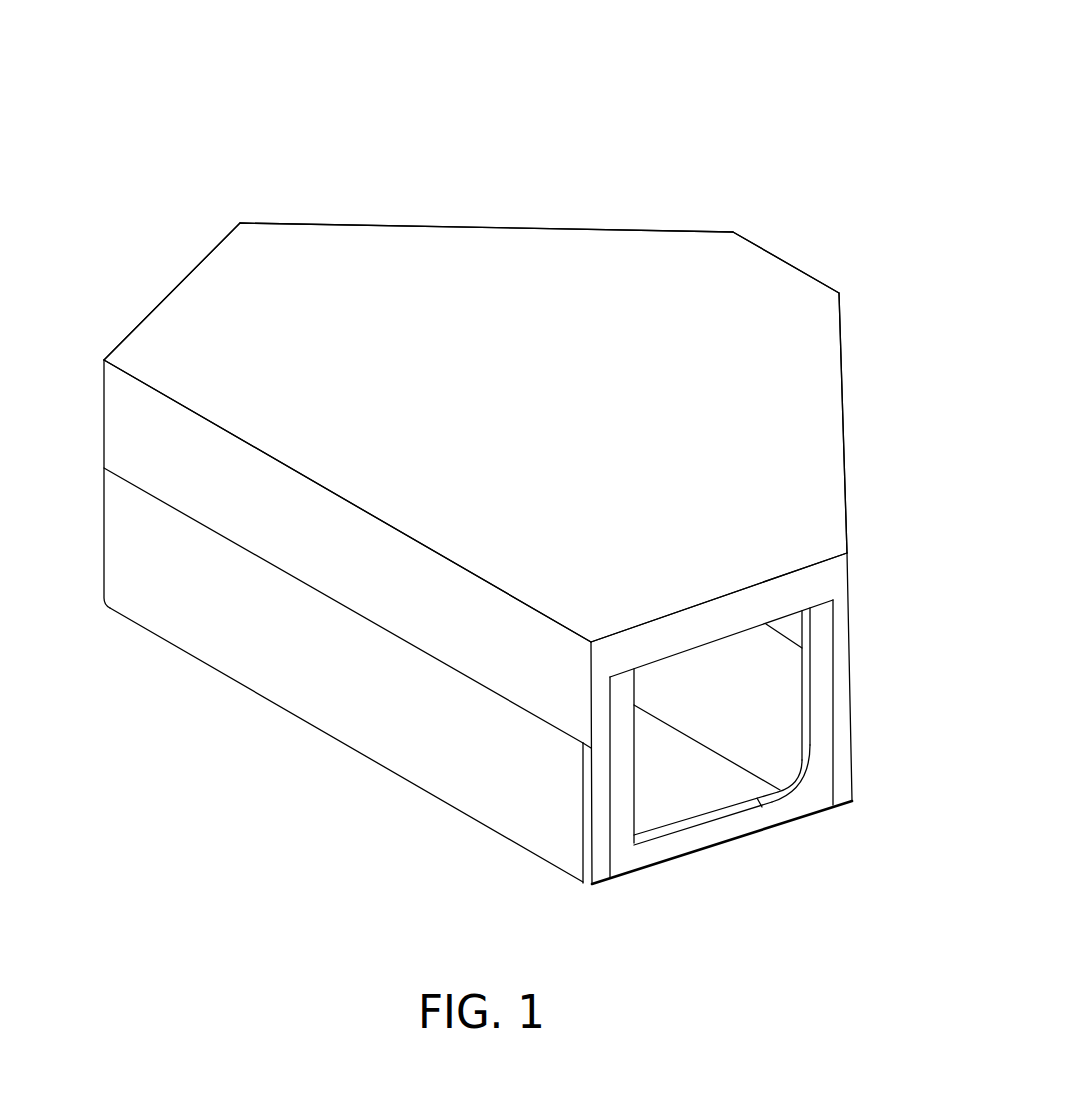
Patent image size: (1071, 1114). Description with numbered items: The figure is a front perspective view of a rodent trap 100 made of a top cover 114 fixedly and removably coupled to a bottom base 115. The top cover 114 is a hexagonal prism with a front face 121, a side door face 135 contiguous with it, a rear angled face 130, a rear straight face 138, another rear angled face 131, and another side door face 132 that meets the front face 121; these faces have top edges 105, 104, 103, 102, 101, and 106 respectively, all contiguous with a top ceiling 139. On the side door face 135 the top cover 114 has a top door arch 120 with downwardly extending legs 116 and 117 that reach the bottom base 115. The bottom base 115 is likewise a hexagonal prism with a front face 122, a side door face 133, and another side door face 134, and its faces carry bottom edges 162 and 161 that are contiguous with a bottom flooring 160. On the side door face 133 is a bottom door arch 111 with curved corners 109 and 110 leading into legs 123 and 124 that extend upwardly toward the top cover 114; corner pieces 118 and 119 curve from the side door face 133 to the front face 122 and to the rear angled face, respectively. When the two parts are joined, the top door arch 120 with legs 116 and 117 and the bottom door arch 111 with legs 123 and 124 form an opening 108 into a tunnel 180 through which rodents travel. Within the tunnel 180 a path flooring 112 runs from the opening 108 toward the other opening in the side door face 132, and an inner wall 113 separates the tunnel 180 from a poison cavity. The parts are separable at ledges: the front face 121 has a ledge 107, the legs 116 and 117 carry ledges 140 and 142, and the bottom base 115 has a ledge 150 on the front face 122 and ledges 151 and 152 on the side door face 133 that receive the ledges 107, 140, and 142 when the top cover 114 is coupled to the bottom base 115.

The rodent trap 100 is at (570, 70).
The top edge 101 is at (402, 222).
The top edge 102 is at (757, 246).
The top edge 103 is at (845, 355).
The top edge 104 is at (745, 590).
The top edge 105 is at (418, 530).
The top edge 106 is at (222, 243).
The ledge 107 is at (180, 504).
The opening 108 is at (800, 713).
The curved corner 109 is at (652, 848).
The curved corner 110 is at (798, 800).
The bottom door arch 111 is at (748, 825).
The path flooring 112 is at (702, 791).
The inner wall 113 is at (746, 731).
The top cover 114 is at (650, 211).
The bottom base 115 is at (223, 679).
The leg 116 is at (600, 682).
The leg 117 is at (843, 615).
The corner piece 118 is at (600, 835).
The corner piece 119 is at (843, 788).
The top door arch 120 is at (683, 632).
The front face 121 is at (350, 557).
The front face 122 is at (347, 677).
The leg 123 is at (605, 798).
The leg 124 is at (820, 750).
The rear angled face 130 is at (852, 430).
The rear angled face 131 is at (516, 220).
The side door face 132 is at (130, 327).
The side door face 133 is at (847, 722).
The side door face 134 is at (95, 544).
The side door face 135 is at (825, 578).
The rear straight face 138 is at (810, 266).
The top ceiling 139 is at (500, 416).
The ledge 140 is at (636, 720).
The ledge 142 is at (805, 655).
The ledge 150 is at (200, 531).
The ledge 151 is at (598, 745).
The ledge 152 is at (833, 663).
The bottom flooring 160 is at (455, 819).
The bottom edge 161 is at (633, 877).
The bottom edge 162 is at (347, 747).
The tunnel 180 is at (640, 784).